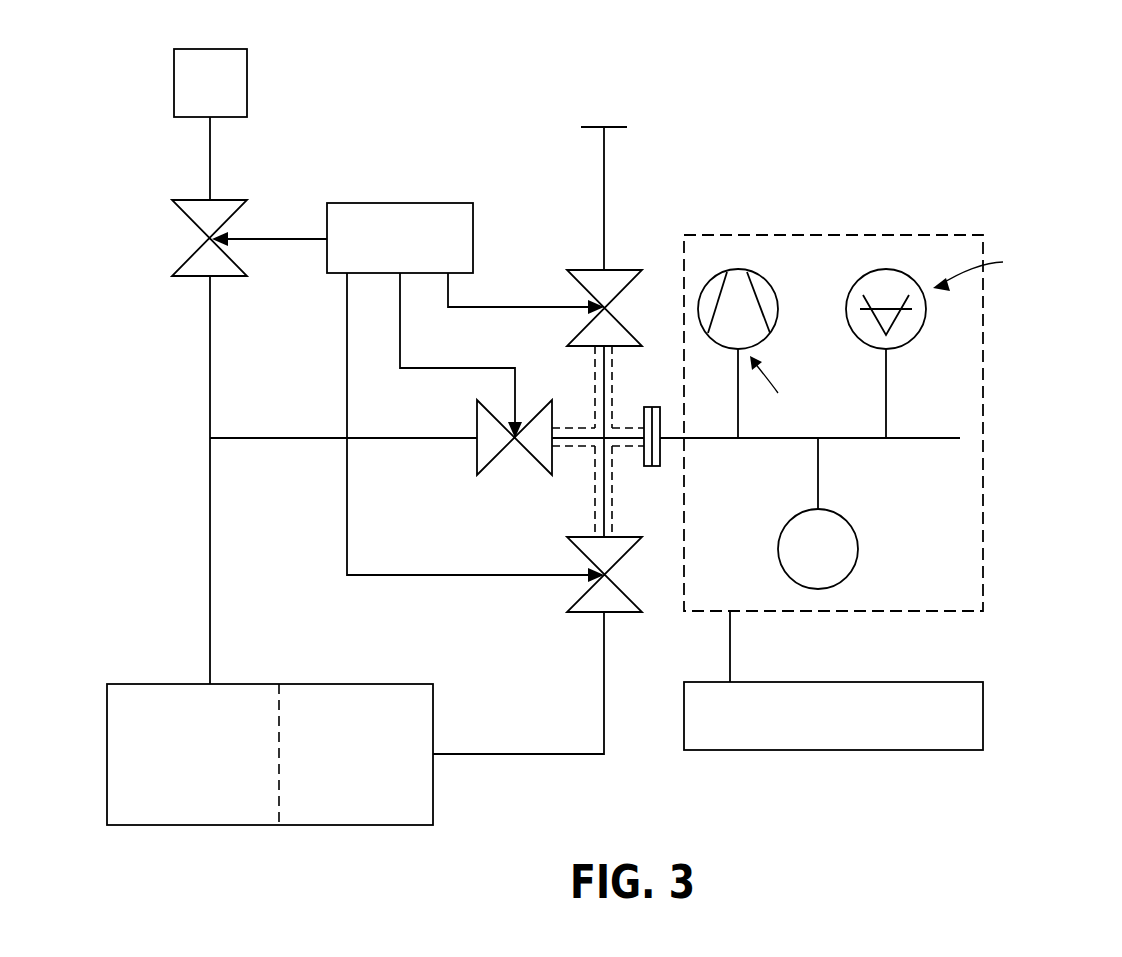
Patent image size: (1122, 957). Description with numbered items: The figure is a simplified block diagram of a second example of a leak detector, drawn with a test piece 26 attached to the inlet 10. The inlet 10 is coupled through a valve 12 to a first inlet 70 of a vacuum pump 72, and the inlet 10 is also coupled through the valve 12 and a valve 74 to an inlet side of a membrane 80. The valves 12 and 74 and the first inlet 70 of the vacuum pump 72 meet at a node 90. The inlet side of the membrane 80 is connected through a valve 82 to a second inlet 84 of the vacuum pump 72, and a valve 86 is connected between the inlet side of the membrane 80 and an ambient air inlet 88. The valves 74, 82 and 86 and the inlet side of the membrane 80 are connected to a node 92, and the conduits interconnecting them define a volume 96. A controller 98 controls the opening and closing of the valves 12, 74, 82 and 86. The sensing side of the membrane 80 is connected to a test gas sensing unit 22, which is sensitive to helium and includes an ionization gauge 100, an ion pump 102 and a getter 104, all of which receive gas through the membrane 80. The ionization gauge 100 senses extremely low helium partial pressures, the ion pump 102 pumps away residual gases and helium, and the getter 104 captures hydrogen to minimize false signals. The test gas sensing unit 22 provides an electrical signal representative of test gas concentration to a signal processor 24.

The test piece 26 is at (247, 92).
The inlet 10 is at (210, 167).
The valve 12 is at (232, 213).
The controller 98 is at (385, 203).
The ambient air inlet 88 is at (604, 152).
The valve 86 is at (578, 284).
The node 90 is at (210, 437).
The valve 74 is at (500, 415).
The volume 96 is at (590, 448).
The node 92 is at (607, 448).
The membrane 80 is at (650, 407).
The valve 82 is at (578, 598).
The second inlet 84 is at (463, 754).
The first inlet 70 is at (210, 668).
The vacuum pump 72 is at (162, 666).
The test gas sensing unit 22 is at (983, 404).
The getter 104 is at (765, 280).
The ionization gauge 100 is at (898, 348).
The ion pump 102 is at (853, 530).
The signal processor 24 is at (983, 722).